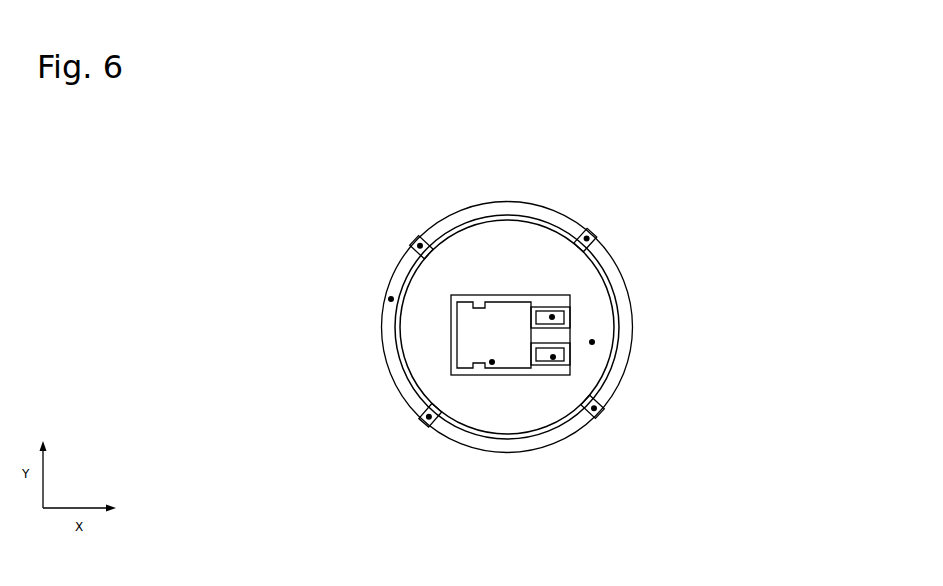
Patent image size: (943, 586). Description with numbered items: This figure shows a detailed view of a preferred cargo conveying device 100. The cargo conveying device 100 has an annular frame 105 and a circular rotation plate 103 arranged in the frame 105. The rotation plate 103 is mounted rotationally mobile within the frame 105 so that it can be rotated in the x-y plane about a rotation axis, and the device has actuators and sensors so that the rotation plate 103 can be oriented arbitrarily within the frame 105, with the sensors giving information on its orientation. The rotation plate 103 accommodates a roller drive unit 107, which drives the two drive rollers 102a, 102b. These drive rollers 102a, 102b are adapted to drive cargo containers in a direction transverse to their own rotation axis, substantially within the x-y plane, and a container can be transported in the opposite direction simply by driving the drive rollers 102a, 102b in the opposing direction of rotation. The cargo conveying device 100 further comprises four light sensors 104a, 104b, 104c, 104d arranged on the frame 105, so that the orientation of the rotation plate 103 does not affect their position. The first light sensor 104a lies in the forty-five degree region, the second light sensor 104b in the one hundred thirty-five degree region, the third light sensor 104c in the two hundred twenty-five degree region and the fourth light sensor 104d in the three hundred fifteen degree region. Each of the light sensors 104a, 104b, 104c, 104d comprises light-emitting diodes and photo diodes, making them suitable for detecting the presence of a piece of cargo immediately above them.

The cargo conveying device 100 is at (444, 184).
The drive roller 102a is at (555, 359).
The drive roller 102b is at (554, 315).
The rotation plate 103 is at (594, 342).
The first light sensor 104a is at (425, 417).
The second light sensor 104b is at (414, 247).
The third light sensor 104c is at (598, 238).
The fourth light sensor 104d is at (597, 412).
The annular frame 105 is at (390, 300).
The roller drive unit 107 is at (493, 364).